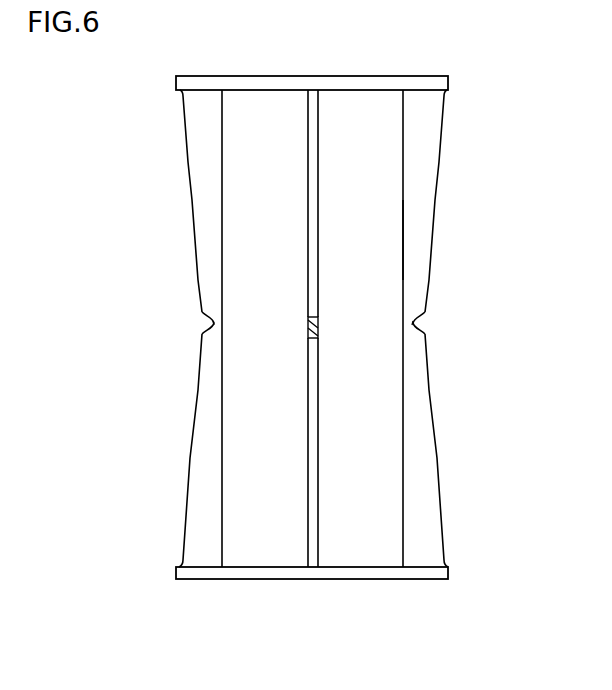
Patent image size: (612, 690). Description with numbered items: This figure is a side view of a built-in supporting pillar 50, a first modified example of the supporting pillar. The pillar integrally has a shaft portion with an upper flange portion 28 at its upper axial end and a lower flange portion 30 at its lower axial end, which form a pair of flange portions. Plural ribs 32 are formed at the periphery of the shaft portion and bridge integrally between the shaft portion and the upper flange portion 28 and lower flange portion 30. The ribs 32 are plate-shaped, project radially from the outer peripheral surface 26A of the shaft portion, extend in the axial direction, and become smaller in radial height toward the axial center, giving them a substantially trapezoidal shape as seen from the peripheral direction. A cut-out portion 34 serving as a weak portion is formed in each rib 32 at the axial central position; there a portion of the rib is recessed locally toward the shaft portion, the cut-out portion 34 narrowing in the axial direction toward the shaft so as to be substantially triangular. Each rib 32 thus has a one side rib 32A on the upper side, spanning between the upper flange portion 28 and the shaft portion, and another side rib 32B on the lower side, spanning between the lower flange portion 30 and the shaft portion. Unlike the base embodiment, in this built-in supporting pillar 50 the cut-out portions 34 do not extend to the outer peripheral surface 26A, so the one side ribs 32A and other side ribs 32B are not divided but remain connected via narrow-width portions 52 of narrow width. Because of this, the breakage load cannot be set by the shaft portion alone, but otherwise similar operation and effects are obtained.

The built-in supporting pillar 50 is at (322, 323).
The upper flange portion 28 is at (355, 75).
The lower flange portion 30 is at (268, 580).
The rib 32 is at (311, 328).
The one side rib 32A is at (188, 162).
The other side rib 32B is at (190, 458).
The cut-out portion 34 is at (211, 322).
The narrow-width portion 52 is at (215, 330).
The outer peripheral surface 26A is at (372, 238).